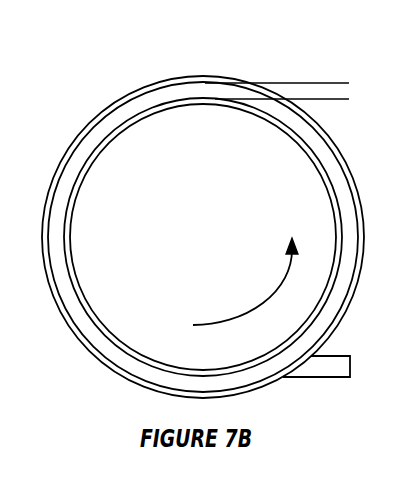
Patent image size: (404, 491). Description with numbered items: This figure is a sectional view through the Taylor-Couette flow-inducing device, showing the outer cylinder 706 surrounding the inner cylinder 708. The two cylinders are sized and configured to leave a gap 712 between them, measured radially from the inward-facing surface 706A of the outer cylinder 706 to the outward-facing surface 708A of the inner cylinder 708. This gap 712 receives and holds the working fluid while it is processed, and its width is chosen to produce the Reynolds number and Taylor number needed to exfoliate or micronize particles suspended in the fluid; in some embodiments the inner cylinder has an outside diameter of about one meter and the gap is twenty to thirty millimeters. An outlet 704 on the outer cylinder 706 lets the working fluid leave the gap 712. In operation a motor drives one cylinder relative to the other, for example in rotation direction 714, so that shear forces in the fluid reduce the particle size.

The outlet 704 is at (327, 378).
The outer cylinder 706 is at (78, 135).
The inward-facing surface of the outer cylinder 706A is at (95, 128).
The inner cylinder 708 is at (127, 120).
The outward-facing surface of the inner cylinder 708A is at (172, 104).
The gap 712 is at (337, 137).
The rotation direction 714 is at (245, 281).